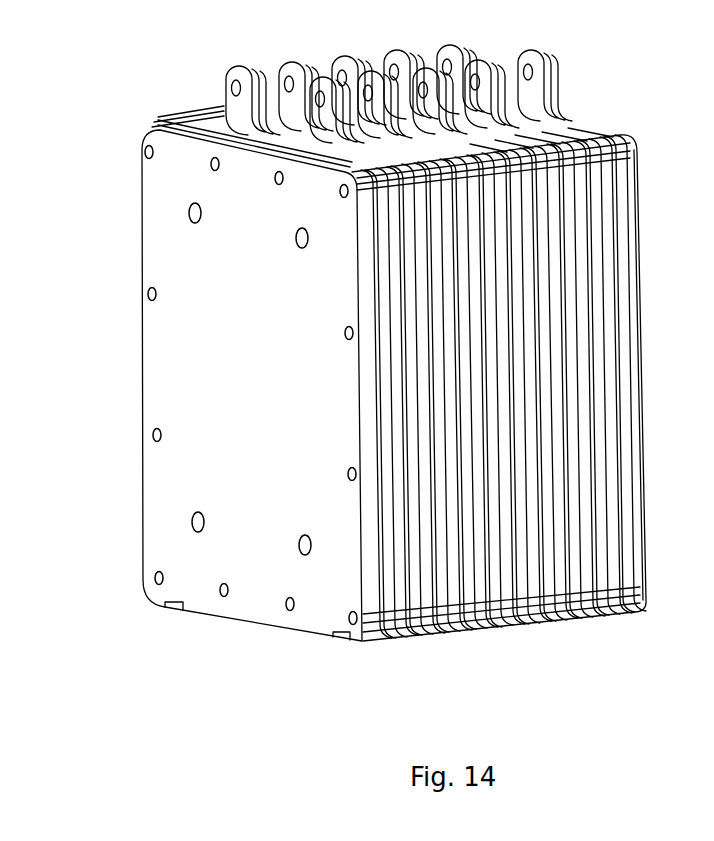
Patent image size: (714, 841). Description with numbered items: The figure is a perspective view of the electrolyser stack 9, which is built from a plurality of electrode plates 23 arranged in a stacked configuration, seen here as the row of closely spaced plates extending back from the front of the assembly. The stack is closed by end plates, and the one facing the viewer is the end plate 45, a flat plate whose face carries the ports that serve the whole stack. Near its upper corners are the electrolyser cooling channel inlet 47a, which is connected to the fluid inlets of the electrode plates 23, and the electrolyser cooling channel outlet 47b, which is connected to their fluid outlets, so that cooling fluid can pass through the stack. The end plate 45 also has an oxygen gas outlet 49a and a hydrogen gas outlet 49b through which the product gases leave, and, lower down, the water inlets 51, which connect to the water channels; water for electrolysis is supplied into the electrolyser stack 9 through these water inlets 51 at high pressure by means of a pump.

The electrolyser stack 9 is at (653, 118).
The electrode plate 23 is at (492, 604).
The end plate 45 is at (145, 473).
The electrolyser cooling channel inlet 47a is at (145, 151).
The electrolyser cooling channel outlet 47b is at (344, 198).
The oxygen gas outlet 49a is at (188, 212).
The hydrogen gas outlet 49b is at (295, 240).
The water inlets 51 is at (302, 557).